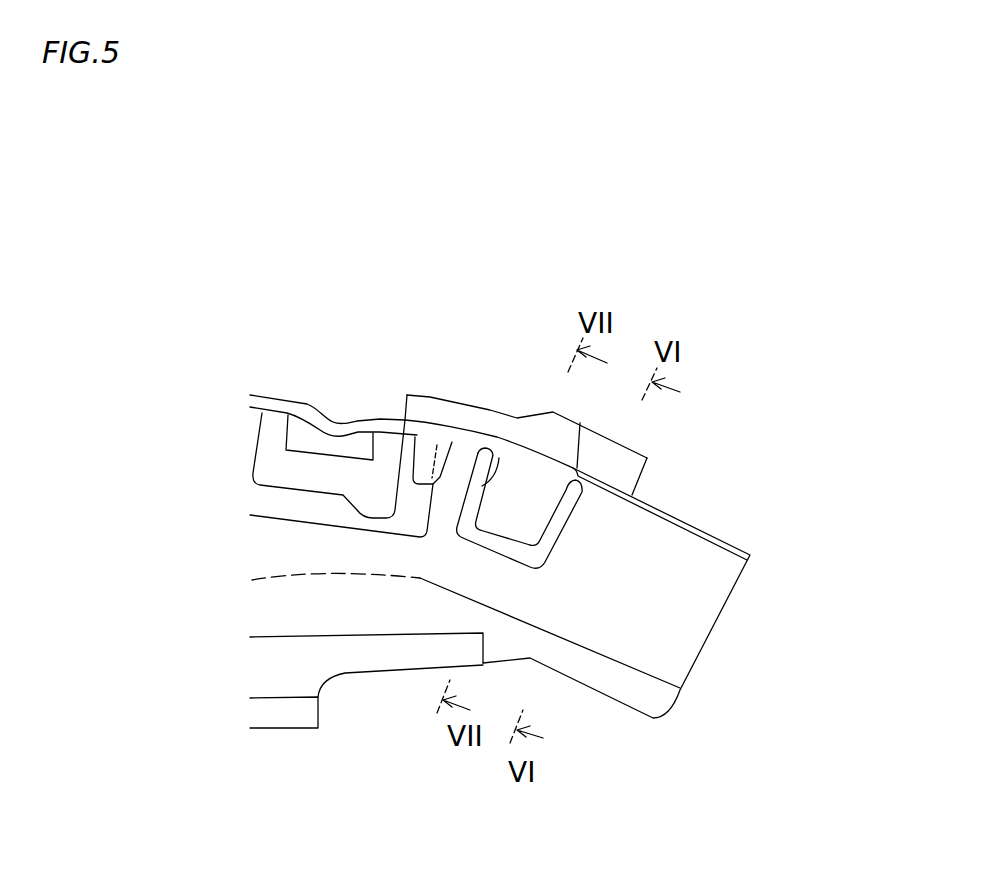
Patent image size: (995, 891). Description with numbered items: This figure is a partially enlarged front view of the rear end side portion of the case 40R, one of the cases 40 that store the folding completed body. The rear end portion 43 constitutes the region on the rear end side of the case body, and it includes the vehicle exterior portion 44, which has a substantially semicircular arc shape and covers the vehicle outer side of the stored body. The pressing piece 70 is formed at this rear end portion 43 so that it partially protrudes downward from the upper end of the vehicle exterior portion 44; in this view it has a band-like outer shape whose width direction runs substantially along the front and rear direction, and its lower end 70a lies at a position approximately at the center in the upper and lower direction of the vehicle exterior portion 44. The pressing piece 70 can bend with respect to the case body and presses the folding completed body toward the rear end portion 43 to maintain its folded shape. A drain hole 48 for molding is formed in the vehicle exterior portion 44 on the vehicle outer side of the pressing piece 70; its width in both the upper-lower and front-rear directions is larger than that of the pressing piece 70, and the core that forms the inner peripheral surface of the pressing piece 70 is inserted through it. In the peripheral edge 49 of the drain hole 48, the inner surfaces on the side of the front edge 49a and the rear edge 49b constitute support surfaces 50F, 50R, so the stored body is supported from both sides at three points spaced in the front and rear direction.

The case 40 is at (411, 361).
The case 40R is at (420, 332).
The rear end portion 43 is at (692, 703).
The vehicle exterior portion 44 is at (660, 568).
The drain hole 48 is at (467, 533).
The peripheral edge 49 is at (591, 415).
The front edge 49a is at (499, 458).
The rear edge 49b is at (577, 468).
The support surface 50F is at (450, 492).
The support surface 50R is at (570, 533).
The pressing piece 70 is at (523, 518).
The lower end 70a is at (497, 533).